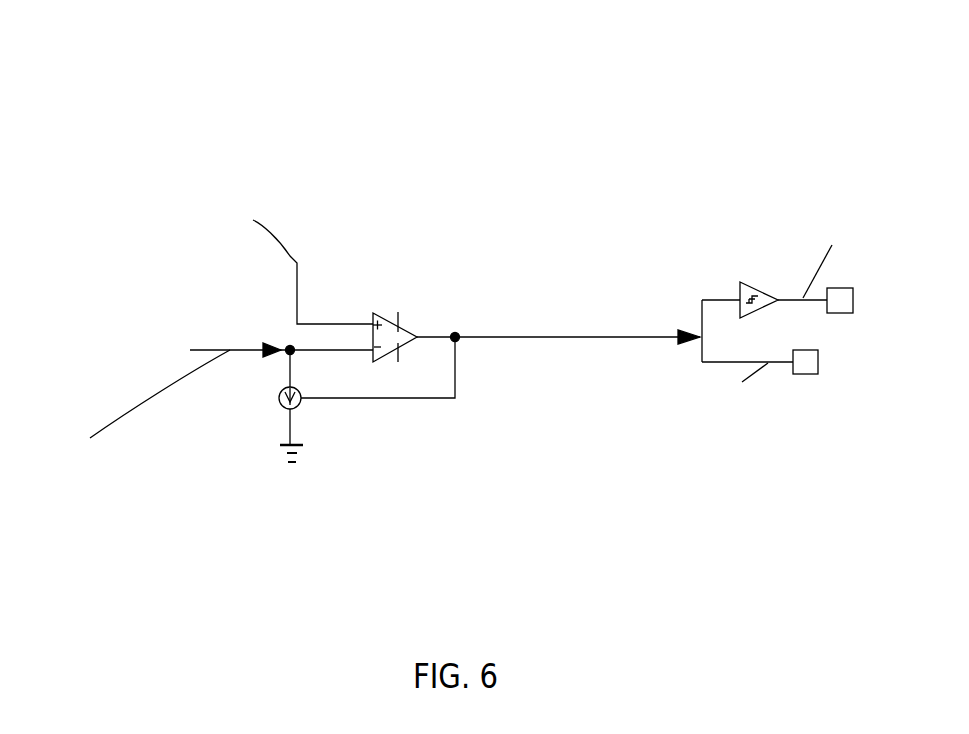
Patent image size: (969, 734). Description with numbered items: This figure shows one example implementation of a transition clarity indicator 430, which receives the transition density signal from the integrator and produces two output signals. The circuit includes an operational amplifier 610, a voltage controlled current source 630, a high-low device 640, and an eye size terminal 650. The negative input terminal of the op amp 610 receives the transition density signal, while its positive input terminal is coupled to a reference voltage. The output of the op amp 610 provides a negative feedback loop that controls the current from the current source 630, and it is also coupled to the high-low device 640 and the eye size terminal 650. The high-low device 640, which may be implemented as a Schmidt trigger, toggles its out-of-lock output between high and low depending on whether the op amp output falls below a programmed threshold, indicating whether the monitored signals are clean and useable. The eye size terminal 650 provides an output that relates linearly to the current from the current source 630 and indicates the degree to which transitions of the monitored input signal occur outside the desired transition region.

The out-of-lock detection circuit 430 is at (208, 138).
The operational amplifier 610 is at (378, 308).
The voltage controlled current source 630 is at (279, 405).
The high-low device 640 is at (757, 292).
The eye size terminal 650 is at (803, 375).